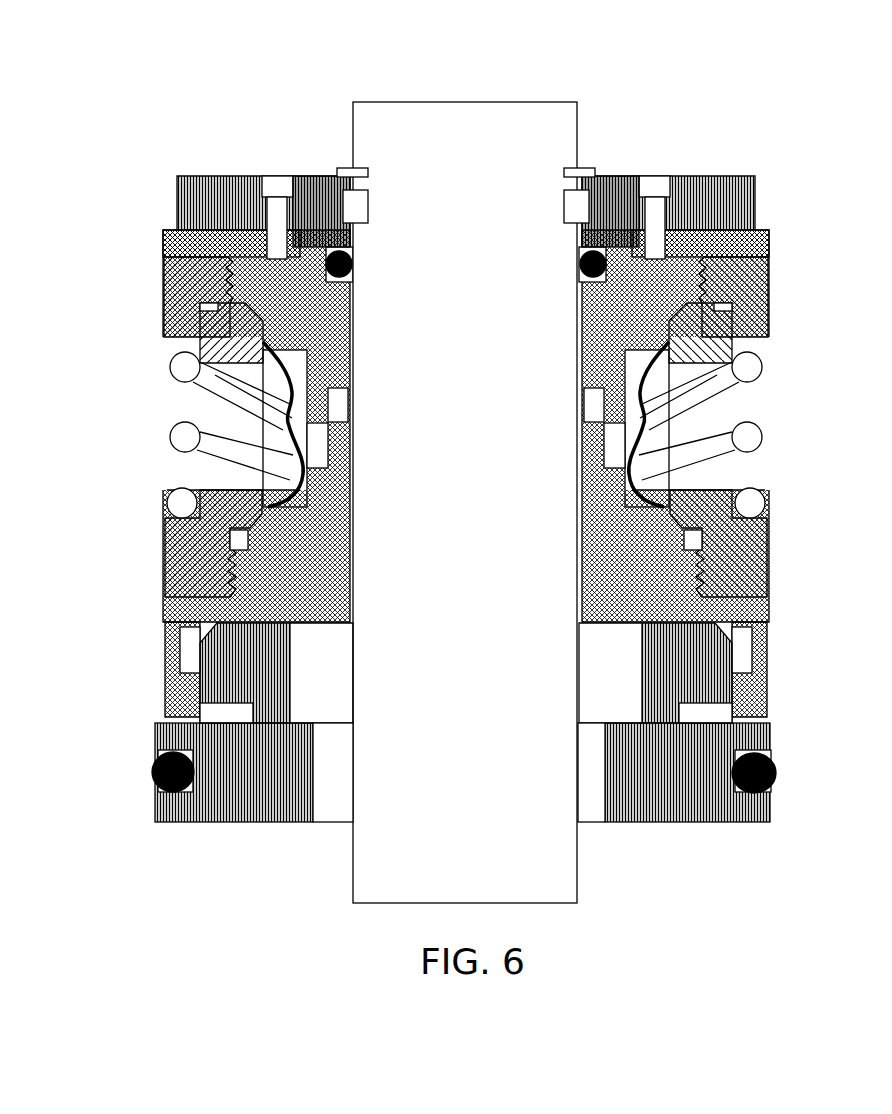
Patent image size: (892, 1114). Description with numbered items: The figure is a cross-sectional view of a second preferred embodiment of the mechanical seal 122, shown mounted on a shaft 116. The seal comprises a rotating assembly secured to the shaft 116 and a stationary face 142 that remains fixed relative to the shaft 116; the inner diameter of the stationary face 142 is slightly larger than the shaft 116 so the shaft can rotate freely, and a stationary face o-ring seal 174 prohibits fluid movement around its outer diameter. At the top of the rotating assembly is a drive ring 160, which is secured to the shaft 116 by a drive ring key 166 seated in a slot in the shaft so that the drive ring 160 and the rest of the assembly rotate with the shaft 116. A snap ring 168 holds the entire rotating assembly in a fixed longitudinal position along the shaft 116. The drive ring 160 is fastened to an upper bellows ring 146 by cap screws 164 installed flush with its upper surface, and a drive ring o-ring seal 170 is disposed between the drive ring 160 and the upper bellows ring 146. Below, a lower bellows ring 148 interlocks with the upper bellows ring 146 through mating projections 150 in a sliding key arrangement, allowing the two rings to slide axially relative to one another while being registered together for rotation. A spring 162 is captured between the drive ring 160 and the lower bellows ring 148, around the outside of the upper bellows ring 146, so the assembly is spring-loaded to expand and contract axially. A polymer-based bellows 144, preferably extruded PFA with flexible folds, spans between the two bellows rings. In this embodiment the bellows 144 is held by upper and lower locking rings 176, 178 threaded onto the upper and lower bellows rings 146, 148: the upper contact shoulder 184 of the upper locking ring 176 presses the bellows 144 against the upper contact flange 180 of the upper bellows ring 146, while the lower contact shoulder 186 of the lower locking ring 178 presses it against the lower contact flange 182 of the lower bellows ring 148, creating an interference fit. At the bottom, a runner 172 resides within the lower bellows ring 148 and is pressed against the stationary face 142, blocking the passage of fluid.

The mechanical seal 122 is at (655, 93).
The shaft 116 is at (578, 132).
The drive ring 160 is at (762, 187).
The upper bellows ring 146 is at (767, 277).
The lower bellows ring 148 is at (768, 617).
The mating projections 150 is at (650, 410).
The snap ring 168 is at (342, 158).
The drive ring key 166 is at (318, 175).
The cap screws 164 is at (317, 175).
The drive ring o-ring seal 170 is at (167, 243).
The upper contact flange 180 is at (163, 277).
The upper locking ring 176 is at (163, 317).
The upper contact shoulder 184 is at (200, 347).
The bellows 144 is at (283, 430).
The lower contact shoulder 186 is at (230, 488).
The spring 162 is at (160, 490).
The lower locking ring 178 is at (163, 545).
The lower contact flange 182 is at (283, 528).
The runner 172 is at (250, 713).
The stationary face o-ring seal 174 is at (157, 764).
The stationary face 142 is at (153, 804).